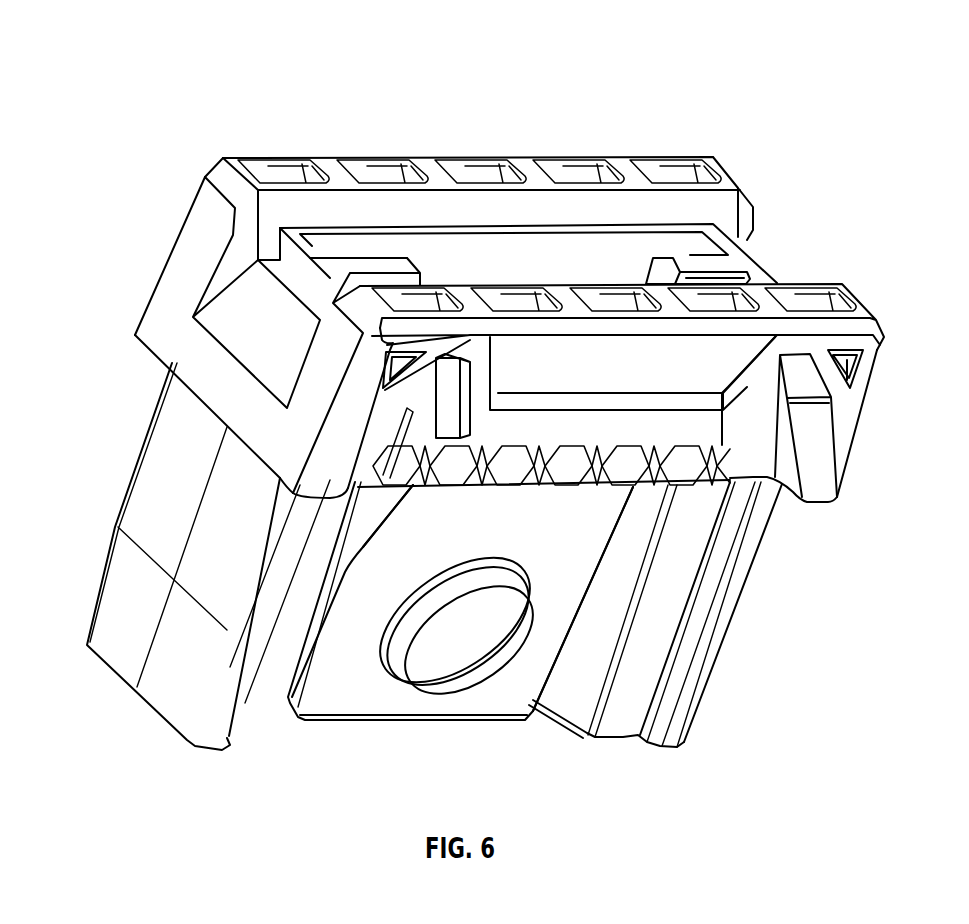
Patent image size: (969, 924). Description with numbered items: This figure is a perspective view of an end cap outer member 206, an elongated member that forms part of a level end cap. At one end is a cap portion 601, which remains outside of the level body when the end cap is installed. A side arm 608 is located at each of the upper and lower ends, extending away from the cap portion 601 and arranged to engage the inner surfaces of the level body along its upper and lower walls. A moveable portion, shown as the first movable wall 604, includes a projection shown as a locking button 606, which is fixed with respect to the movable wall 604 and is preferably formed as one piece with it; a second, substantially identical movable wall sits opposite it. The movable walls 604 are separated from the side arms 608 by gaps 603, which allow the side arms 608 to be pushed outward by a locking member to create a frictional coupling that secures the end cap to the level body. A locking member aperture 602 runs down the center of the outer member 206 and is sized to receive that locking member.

The outer member 206 is at (731, 93).
The cap portion 601 is at (563, 188).
The locking member aperture 602 is at (467, 258).
The gaps 603 is at (338, 536).
The first movable wall 604 is at (357, 677).
The locking button 606 is at (482, 655).
The side arm 608 is at (183, 483).